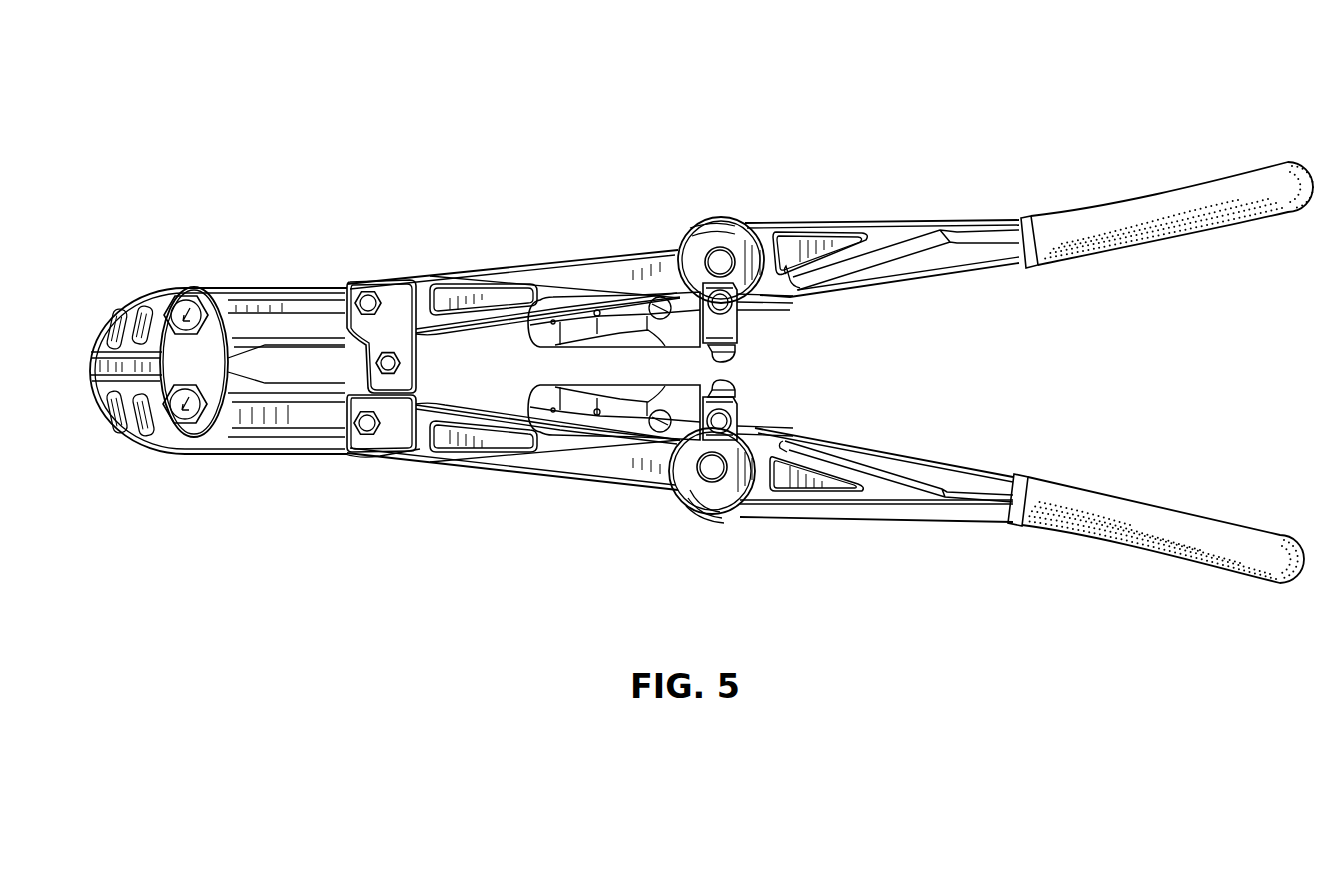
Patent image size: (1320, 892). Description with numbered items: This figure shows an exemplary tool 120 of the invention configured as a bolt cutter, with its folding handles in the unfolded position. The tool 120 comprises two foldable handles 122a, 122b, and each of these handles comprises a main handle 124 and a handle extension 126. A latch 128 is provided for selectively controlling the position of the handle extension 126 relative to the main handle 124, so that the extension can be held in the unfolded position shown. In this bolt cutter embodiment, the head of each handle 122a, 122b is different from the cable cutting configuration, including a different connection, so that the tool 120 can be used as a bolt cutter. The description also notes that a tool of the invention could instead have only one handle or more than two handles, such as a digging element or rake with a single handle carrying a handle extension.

The tool 120 is at (701, 334).
The foldable handle 122a is at (933, 195).
The foldable handle 122b is at (934, 556).
The main handle 124 is at (477, 254).
The handle extension 126 is at (945, 292).
The latch 128 is at (772, 327).